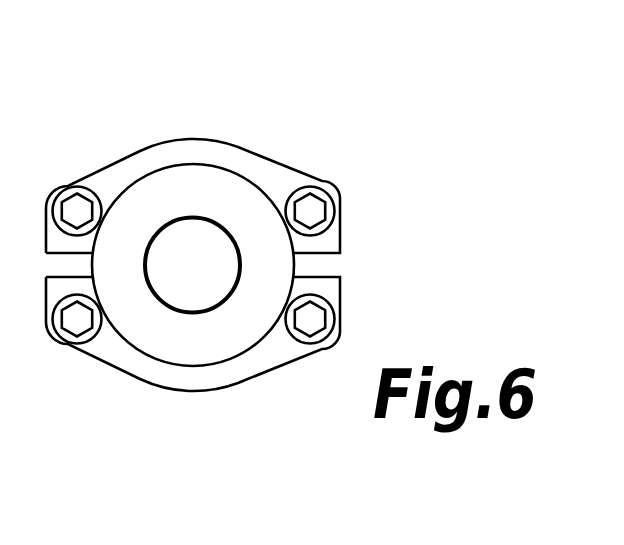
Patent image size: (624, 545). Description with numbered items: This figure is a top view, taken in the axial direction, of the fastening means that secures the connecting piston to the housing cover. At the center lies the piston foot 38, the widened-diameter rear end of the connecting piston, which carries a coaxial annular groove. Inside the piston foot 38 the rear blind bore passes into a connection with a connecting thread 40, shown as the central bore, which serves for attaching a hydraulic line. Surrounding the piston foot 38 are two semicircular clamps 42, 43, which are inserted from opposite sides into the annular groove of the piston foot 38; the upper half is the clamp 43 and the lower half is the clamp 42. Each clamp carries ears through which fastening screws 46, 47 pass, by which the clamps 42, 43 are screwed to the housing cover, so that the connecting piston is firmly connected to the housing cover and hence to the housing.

The piston foot 38 is at (192, 189).
The connecting thread 40 is at (193, 312).
The semicircular clamp 42 is at (263, 355).
The semicircular clamp 43 is at (265, 167).
The fastening screw 46 is at (77, 318).
The fastening screw 47 is at (77, 210).